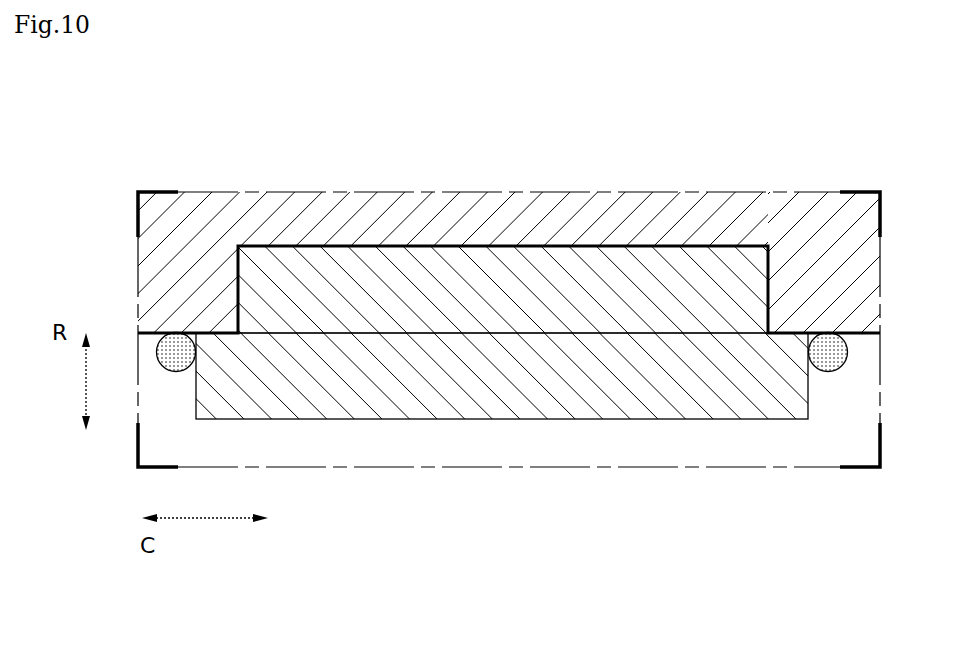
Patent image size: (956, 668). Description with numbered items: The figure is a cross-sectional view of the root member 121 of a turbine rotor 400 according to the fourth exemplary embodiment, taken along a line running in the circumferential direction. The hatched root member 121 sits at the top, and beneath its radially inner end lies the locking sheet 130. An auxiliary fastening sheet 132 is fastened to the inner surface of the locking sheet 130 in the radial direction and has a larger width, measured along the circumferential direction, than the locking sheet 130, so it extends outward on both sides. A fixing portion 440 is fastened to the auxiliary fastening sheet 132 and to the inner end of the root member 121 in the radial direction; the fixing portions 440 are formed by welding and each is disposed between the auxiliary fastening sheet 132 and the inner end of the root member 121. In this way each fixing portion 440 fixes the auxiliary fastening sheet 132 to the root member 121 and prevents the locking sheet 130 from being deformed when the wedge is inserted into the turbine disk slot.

The turbine rotor 400 is at (90, 119).
The root member 121 is at (556, 225).
The locking sheet 130 is at (510, 290).
The auxiliary fastening sheet 132 is at (662, 392).
The fixing portion 440 is at (174, 335).